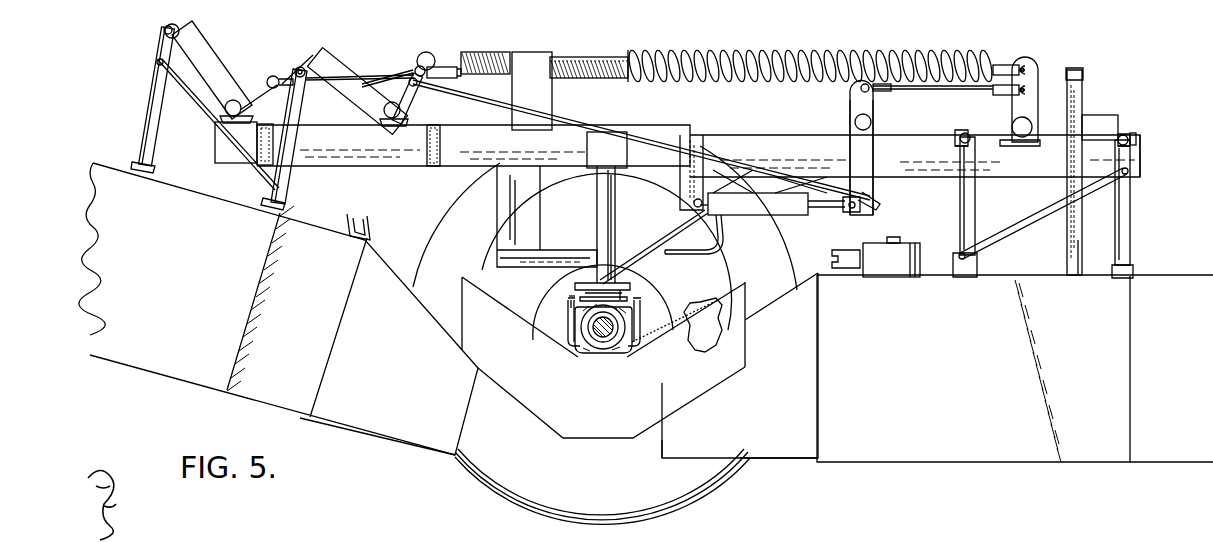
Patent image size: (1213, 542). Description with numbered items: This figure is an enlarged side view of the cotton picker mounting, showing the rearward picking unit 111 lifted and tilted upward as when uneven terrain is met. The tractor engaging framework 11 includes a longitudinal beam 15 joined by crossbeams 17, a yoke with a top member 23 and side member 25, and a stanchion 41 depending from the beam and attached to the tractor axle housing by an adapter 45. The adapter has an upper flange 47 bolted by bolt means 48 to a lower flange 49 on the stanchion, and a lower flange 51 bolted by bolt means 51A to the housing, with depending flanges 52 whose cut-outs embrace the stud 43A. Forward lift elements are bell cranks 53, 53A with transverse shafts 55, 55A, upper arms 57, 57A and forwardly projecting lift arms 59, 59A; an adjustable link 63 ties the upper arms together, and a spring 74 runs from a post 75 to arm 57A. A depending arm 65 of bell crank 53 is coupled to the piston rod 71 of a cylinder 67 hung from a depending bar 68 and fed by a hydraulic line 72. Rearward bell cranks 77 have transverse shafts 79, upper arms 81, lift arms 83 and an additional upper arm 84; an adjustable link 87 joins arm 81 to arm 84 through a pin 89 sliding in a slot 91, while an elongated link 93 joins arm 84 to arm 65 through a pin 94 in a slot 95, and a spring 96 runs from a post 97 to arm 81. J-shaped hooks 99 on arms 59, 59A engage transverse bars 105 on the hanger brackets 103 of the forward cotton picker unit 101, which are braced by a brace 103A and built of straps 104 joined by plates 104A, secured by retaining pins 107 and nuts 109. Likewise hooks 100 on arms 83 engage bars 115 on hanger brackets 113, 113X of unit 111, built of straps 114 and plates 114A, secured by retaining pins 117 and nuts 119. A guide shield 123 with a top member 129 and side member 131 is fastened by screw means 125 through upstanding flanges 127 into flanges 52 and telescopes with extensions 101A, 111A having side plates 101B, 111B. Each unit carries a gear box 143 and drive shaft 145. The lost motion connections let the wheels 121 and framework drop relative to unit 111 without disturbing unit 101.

The tractor engaging framework 11 is at (735, 114).
The longitudinal beam 15 is at (750, 138).
The crossbeam 17 is at (258, 135).
The top member 23 is at (1083, 76).
The side member 25 is at (1068, 232).
The stanchion 41 is at (612, 200).
The stud 43A is at (576, 322).
The adapter 45 is at (629, 276).
The upper flange 47 is at (637, 299).
The bolt means 48 is at (619, 283).
The lower flange 49 is at (632, 293).
The lower flange 51 is at (573, 308).
The bolt means 51A is at (571, 298).
The depending flange 52 is at (568, 312).
The bell crank 53 is at (839, 103).
The bell crank 53A is at (1042, 72).
The transverse shaft 55 is at (855, 121).
The transverse shaft 55A is at (1012, 126).
The upper arm 57 is at (873, 101).
The upper arm 57A is at (1030, 106).
The lift arm 59 is at (932, 106).
The lift arm 59A is at (1105, 118).
The adjustable link 63 is at (973, 91).
The depending arm 65 is at (862, 178).
The cylinder 67 is at (760, 210).
The depending bar 68 is at (688, 197).
The piston rod 71 is at (832, 213).
The hydraulic line 72 is at (716, 247).
The spring 74 is at (797, 56).
The post 75 is at (540, 96).
The bell crank 77 is at (239, 58).
The transverse shaft 79 is at (243, 113).
The upper arm 81 is at (262, 92).
The lift arm 83 is at (207, 62).
The upper arm 84 is at (410, 90).
The adjustable link 87 is at (377, 70).
The pin 89 is at (419, 64).
The slot 91 is at (440, 76).
The elongated link 93 is at (587, 124).
The pin 94 is at (862, 210).
The slot 95 is at (880, 203).
The spring 96 is at (492, 52).
The post 97 is at (956, 106).
The J-shaped hook 99 is at (1131, 133).
The J-shaped hook 100 is at (180, 28).
The forward cotton picker unit 101 is at (948, 399).
The extension 101A is at (777, 283).
The side plate 101B is at (706, 350).
The hanger bracket 103 is at (1068, 207).
The brace 103A is at (1043, 214).
The strap 104 is at (976, 224).
The plate 104A is at (976, 188).
The transverse bar 105 is at (1135, 141).
The retaining pin 107 is at (1119, 138).
The nut 109 is at (1130, 136).
The rearward cotton picking unit 111 is at (198, 277).
The extension 111A is at (390, 248).
The side plate 111B is at (343, 415).
The hanger bracket 113 is at (279, 114).
The hanger bracket 113X is at (303, 178).
The strap 114 is at (150, 135).
The plate 114A is at (147, 108).
The transverse bar 115 is at (168, 34).
The retaining pin 117 is at (176, 34).
The nut 119 is at (164, 30).
The wheel 121 is at (620, 524).
The guide shield 123 is at (473, 270).
The screw means 125 is at (570, 303).
The upstanding flange 127 is at (572, 325).
The top member 129 is at (703, 351).
The side member 131 is at (528, 405).
The gear box 143 is at (900, 250).
The drive shaft 145 is at (838, 250).